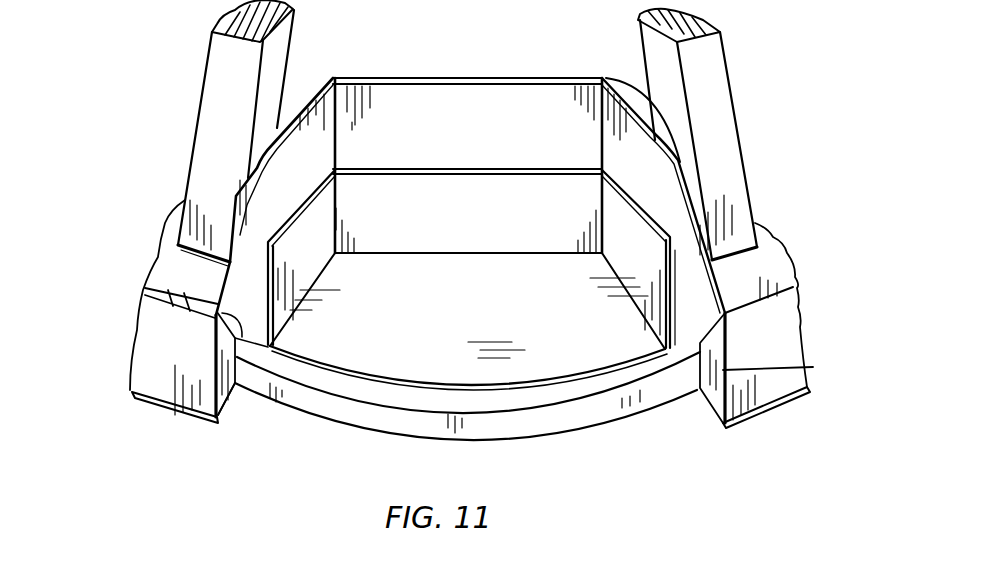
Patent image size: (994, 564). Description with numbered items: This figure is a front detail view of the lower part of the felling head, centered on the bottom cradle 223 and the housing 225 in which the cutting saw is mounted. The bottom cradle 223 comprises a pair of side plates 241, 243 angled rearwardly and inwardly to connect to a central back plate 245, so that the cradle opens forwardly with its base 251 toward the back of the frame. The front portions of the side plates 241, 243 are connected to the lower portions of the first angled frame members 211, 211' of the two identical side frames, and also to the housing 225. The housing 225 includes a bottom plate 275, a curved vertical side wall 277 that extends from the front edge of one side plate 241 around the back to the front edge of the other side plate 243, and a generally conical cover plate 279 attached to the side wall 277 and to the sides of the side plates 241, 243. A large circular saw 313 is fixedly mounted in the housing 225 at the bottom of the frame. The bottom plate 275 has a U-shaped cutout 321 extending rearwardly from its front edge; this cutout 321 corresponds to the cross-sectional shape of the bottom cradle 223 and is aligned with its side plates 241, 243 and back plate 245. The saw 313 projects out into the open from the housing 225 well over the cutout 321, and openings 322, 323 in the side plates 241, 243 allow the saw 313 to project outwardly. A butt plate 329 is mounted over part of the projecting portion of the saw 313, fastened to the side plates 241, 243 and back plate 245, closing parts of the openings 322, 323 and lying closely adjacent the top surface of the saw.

The first angled frame member 211 is at (211, 125).
The first angled frame member 211' is at (732, 134).
The side plate 241 is at (275, 143).
The side plate 243 is at (700, 178).
The central back plate 245 is at (447, 77).
The base 251 is at (492, 145).
The conical cover plate 279 is at (170, 267).
The opening 322 is at (145, 288).
The curved vertical side wall 277 is at (152, 335).
The bottom plate 275 is at (157, 407).
The U-shaped cutout 321 is at (243, 398).
The circular saw 313 is at (397, 433).
The butt plate 329 is at (573, 380).
The bottom cradle 223 is at (680, 286).
The opening 323 is at (800, 370).
The housing 225 is at (778, 406).